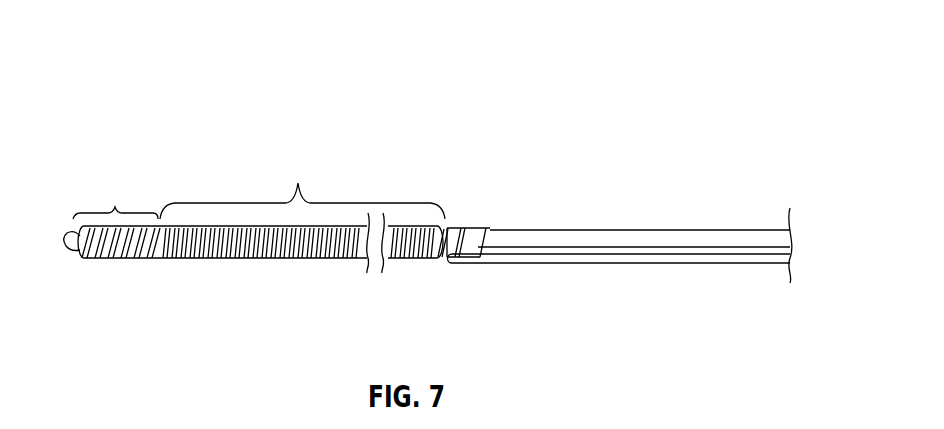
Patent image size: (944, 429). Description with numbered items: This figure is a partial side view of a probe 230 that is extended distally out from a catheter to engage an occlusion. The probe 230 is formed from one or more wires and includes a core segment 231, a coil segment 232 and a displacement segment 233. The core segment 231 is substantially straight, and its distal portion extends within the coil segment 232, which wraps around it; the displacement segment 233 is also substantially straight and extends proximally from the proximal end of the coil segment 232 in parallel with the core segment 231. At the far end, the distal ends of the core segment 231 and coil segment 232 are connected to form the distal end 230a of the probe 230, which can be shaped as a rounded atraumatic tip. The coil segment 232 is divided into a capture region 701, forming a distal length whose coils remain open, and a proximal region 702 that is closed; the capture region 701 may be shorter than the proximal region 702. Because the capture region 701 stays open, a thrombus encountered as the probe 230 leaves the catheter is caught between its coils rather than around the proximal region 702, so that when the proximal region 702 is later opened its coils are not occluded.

The probe 230 is at (168, 73).
The distal end of probe 230a is at (68, 265).
The core segment 231 is at (563, 230).
The coil segment 232 is at (316, 309).
The displacement segment 233 is at (713, 268).
The capture region 701 is at (115, 207).
The proximal region 702 is at (298, 183).